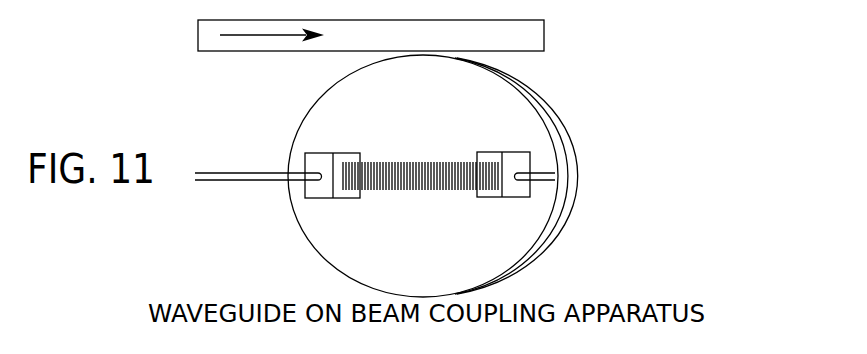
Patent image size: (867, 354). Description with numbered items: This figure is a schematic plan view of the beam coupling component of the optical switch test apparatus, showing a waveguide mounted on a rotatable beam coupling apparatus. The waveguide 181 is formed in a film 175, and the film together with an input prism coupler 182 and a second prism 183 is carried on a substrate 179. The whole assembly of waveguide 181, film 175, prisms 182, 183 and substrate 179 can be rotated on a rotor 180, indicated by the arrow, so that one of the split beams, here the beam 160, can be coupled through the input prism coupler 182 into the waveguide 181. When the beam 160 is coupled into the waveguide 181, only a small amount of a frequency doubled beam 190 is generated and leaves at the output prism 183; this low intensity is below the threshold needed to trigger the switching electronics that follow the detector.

The beam 160 is at (260, 173).
The film 175 is at (560, 213).
The substrate 179 is at (566, 138).
The rotor 180 is at (537, 30).
The waveguide 181 is at (433, 192).
The input prism coupler 182 is at (320, 158).
The prism 183 is at (517, 158).
The frequency doubled beam 190 is at (543, 183).